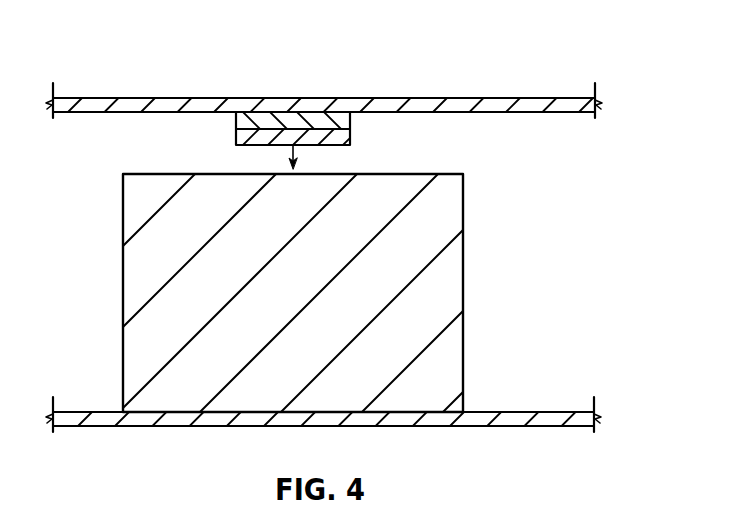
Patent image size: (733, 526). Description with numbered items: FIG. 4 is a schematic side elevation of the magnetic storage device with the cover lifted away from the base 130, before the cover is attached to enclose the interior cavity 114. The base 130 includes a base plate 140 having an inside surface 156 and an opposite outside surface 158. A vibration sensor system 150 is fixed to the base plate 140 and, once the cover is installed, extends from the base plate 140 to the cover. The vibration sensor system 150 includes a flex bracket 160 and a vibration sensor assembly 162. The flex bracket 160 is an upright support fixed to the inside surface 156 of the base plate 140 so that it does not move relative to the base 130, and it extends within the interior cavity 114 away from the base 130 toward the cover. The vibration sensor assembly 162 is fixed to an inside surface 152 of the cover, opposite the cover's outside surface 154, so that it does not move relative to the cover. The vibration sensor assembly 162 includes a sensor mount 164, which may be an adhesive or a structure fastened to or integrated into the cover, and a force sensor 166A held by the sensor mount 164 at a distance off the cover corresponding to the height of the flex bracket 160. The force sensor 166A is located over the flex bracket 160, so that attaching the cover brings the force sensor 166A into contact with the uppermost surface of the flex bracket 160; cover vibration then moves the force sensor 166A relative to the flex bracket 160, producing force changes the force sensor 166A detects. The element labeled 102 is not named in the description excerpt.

The semiconductor device assembly 102 is at (483, 76).
The interior cavity 114 is at (543, 273).
The base 130 is at (190, 427).
The base plate 140 is at (478, 415).
The vibration sensor system 150 is at (485, 182).
The inside surface of the cover 152 is at (400, 113).
The outside surface of the cover 154 is at (437, 98).
The inside surface of the base plate 156 is at (522, 412).
The outside surface of the base plate 158 is at (552, 426).
The flex bracket 160 is at (445, 296).
The vibration sensor assembly 162 is at (235, 130).
The sensor mount 164 is at (262, 120).
The force sensor 166A is at (302, 126).